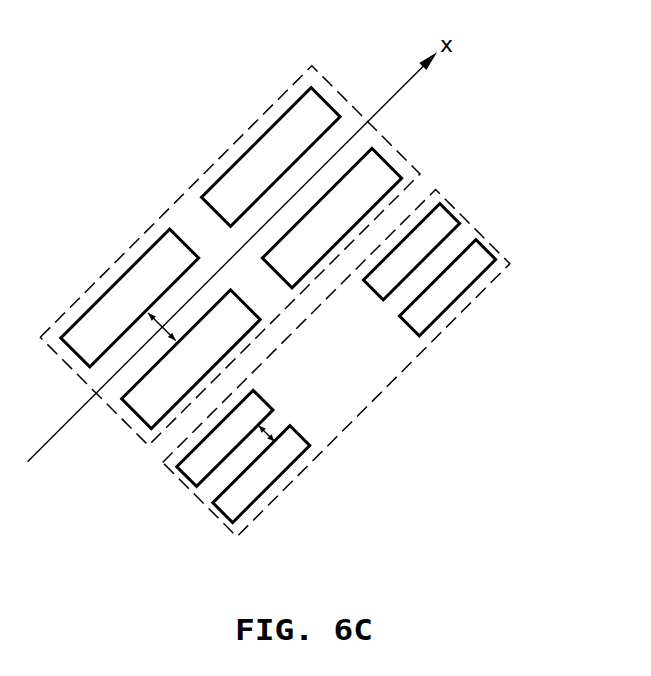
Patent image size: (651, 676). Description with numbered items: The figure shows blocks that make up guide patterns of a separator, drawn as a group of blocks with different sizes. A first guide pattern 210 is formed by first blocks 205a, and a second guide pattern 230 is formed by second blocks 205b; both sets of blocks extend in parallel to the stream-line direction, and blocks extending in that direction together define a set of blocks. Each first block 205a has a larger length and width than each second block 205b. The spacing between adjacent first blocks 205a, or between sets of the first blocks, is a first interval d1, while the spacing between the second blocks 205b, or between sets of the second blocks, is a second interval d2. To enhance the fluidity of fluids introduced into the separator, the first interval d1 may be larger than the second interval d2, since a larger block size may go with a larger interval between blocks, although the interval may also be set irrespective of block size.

The first block 205a is at (378, 172).
The second block 205b is at (480, 250).
The first guide pattern 210 is at (122, 418).
The second guide pattern 230 is at (183, 490).
The first interval d1 is at (62, 399).
The second interval d2 is at (263, 431).